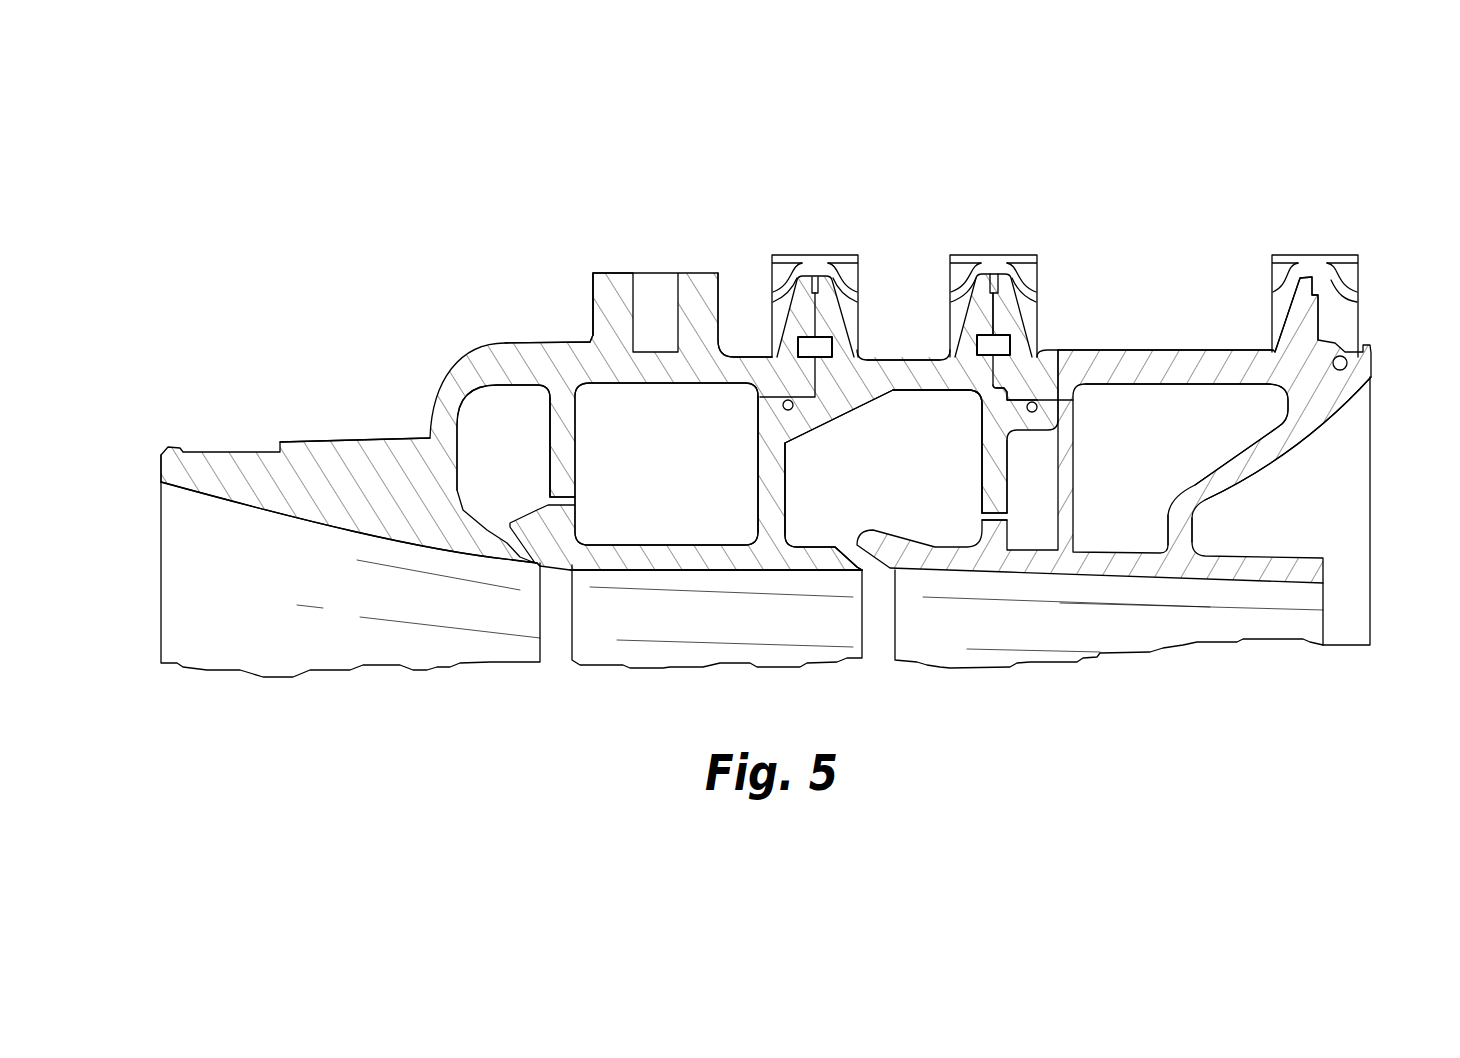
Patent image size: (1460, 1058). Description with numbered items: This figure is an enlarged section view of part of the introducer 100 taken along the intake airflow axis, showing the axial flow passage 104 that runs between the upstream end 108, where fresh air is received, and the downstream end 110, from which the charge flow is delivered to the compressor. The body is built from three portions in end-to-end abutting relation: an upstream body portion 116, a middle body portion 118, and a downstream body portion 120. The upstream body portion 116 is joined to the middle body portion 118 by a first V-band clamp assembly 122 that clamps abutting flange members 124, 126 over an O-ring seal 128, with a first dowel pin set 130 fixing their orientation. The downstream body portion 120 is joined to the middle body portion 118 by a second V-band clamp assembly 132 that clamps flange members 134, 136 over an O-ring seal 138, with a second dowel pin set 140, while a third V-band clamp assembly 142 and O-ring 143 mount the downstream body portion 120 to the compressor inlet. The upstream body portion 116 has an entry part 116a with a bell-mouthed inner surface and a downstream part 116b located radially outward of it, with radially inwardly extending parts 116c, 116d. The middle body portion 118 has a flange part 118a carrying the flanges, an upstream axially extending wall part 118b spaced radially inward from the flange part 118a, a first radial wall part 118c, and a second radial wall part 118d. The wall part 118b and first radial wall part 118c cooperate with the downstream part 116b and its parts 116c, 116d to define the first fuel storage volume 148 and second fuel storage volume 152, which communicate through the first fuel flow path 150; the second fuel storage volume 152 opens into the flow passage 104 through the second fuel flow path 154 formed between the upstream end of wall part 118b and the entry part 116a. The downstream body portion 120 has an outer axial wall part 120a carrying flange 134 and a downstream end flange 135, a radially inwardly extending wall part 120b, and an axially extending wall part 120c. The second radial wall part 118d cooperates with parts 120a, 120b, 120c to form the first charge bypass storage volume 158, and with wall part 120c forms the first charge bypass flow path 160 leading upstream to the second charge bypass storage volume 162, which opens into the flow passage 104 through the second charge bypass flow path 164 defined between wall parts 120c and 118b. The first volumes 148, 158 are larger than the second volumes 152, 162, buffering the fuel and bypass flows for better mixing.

The introducer 100 is at (468, 237).
The axial flow passage 104 is at (210, 629).
The upstream end 108 is at (160, 493).
The downstream end 110 is at (1371, 566).
The upstream body portion 116 is at (477, 343).
The entry part 116a is at (310, 493).
The downstream part 116b is at (593, 340).
The radially inwardly extending part 116c is at (427, 436).
The radially inwardly extending part 116d is at (537, 423).
The middle body portion 118 is at (882, 352).
The flange part 118a is at (903, 367).
The upstream axially extending wall part 118b is at (637, 555).
The first radial wall part 118c is at (765, 492).
The second radial wall part 118d is at (957, 467).
The downstream body portion 120 is at (1137, 350).
The outer axial wall part 120a is at (1173, 345).
The radially inwardly extending wall part 120b is at (1253, 450).
The axially extending wall part 120c is at (1170, 565).
The first V-band clamp assembly 122 is at (822, 253).
The flange member 124 is at (800, 308).
The flange member 126 is at (828, 308).
The O-ring seal 128 is at (704, 365).
The first dowel pin set 130 is at (805, 348).
The second V-band clamp assembly 132 is at (997, 253).
The flange member 134 is at (1000, 295).
The downstream end flange 135 is at (1295, 300).
The flange member 136 is at (965, 325).
The O-ring seal 138 is at (1038, 402).
The second dowel pin set 140 is at (1035, 338).
The third V-band clamp assembly 142 is at (1340, 253).
The O-ring 143 is at (1343, 356).
The first fuel storage volume 148 is at (603, 357).
The first fuel flow path 150 is at (595, 342).
The second fuel storage volume 152 is at (498, 450).
The second fuel flow path 154 is at (516, 565).
The first charge bypass storage volume 158 is at (1210, 415).
The first charge bypass flow path 160 is at (997, 520).
The second charge bypass storage volume 162 is at (918, 507).
The second charge bypass flow path 164 is at (840, 565).